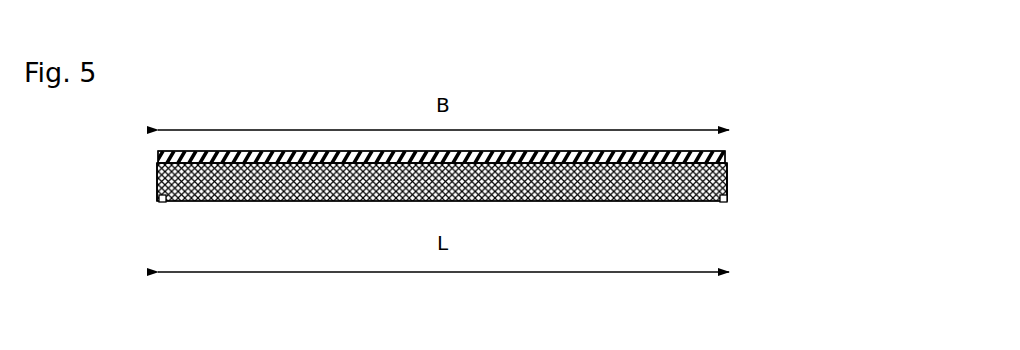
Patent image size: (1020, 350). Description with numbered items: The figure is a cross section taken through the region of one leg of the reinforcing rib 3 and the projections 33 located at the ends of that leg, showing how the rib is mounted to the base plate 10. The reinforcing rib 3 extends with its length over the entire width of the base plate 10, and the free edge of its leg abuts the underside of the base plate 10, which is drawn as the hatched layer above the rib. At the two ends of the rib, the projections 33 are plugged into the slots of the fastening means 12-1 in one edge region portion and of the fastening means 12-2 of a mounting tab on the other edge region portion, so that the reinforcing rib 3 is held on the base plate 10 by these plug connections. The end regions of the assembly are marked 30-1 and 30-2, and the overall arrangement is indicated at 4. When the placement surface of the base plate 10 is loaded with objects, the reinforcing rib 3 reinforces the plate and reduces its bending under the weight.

The composite fiber-reinforced component / assembly 4 is at (692, 82).
The base plate 10 is at (340, 157).
The reinforcing rib 3 is at (358, 196).
The first end region 30-1 is at (150, 176).
The second end region 30-2 is at (735, 170).
The projection 33 is at (728, 183).
The fastening means 12-1 is at (164, 201).
The fastening means 12-2 is at (730, 203).